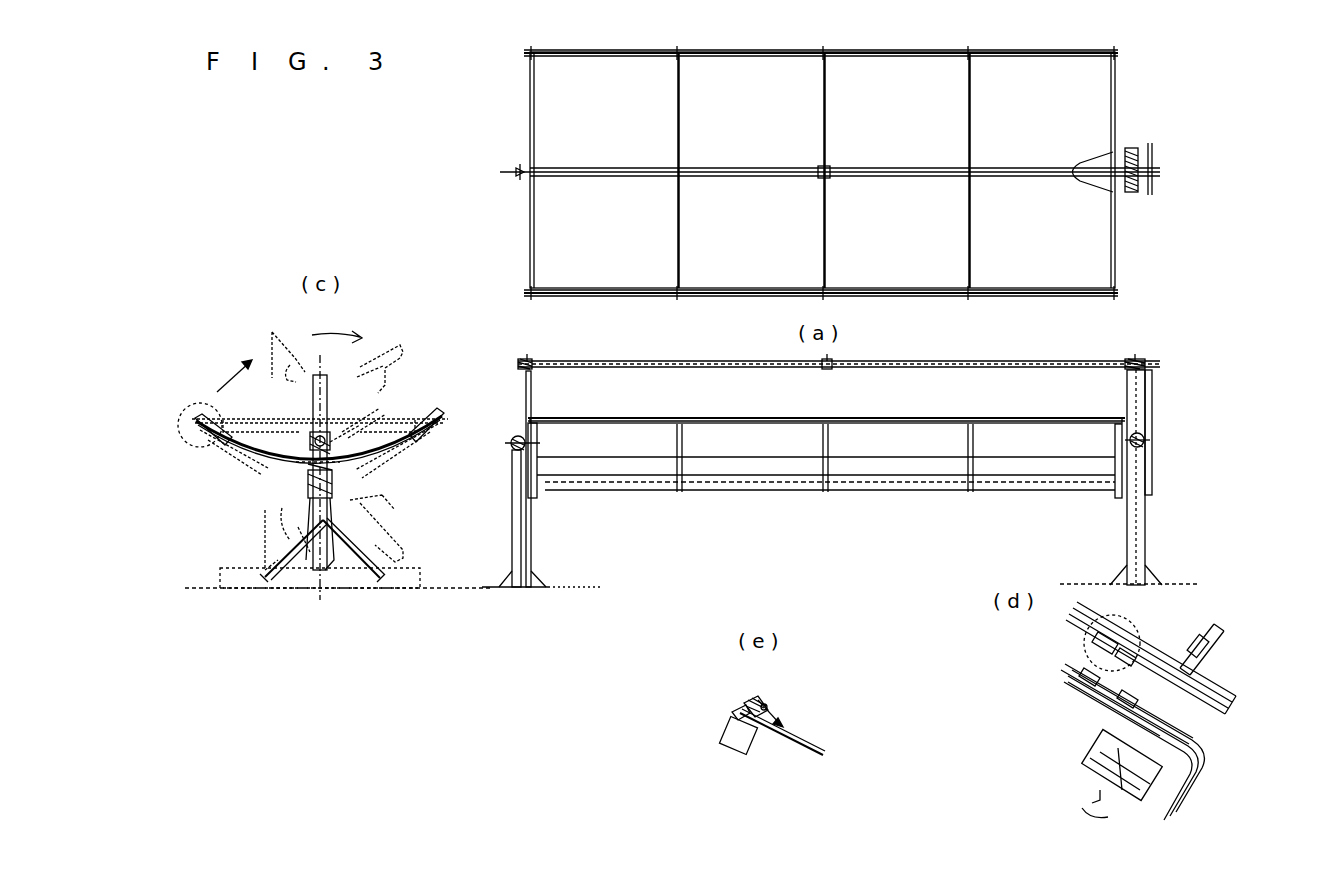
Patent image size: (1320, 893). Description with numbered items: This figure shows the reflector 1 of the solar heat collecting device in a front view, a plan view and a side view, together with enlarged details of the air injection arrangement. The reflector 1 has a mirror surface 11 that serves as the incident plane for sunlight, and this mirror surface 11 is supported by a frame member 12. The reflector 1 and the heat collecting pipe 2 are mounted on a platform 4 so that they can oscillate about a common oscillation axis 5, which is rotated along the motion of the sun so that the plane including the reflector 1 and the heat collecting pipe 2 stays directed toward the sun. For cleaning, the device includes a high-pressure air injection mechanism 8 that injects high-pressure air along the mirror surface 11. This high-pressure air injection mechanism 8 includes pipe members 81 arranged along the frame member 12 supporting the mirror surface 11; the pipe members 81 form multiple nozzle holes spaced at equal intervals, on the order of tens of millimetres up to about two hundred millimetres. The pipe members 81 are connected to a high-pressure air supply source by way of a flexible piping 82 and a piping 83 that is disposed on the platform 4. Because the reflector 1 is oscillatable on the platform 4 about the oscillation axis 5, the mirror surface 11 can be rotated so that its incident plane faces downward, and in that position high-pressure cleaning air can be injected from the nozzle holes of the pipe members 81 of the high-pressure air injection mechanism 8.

The reflector 1 is at (1130, 262).
The mirror surface 11 is at (800, 741).
The frame member 12 is at (738, 710).
The heat collecting pipe 2 is at (1016, 360).
The platform 4 is at (1136, 528).
The oscillation axis 5 is at (1148, 164).
The high-pressure air injection mechanism 8 is at (414, 488).
The pipe members 81 is at (765, 52).
The flexible piping 82 is at (308, 466).
The piping 83 is at (330, 556).